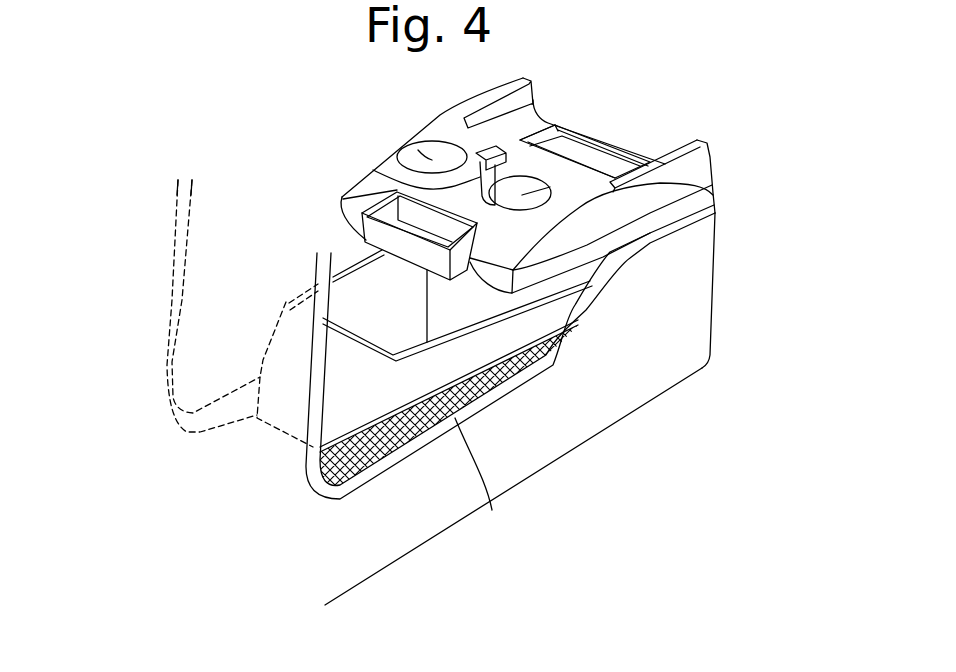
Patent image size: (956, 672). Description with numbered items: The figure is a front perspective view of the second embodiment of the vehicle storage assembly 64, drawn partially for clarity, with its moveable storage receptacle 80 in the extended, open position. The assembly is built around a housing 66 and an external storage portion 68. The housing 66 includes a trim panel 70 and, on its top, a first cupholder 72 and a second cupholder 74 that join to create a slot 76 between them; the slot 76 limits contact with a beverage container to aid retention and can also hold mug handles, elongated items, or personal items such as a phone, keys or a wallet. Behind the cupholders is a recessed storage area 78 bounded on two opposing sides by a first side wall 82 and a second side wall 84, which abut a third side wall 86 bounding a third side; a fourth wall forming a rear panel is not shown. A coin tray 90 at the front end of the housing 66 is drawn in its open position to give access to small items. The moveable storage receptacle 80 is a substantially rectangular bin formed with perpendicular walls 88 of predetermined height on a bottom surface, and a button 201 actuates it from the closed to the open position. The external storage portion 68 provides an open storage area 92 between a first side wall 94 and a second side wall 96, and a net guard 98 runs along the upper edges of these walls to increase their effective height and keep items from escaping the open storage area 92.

The vehicle storage assembly 64 is at (120, 213).
The housing 66 is at (750, 283).
The external storage portion 68 is at (582, 490).
The trim panel 70 is at (641, 369).
The first cupholder 72 is at (415, 152).
The second cupholder 74 is at (715, 196).
The slot 76 is at (373, 170).
The recessed storage area 78 is at (603, 160).
The moveable storage receptacle 80 is at (357, 303).
The first side wall 82 is at (525, 90).
The second side wall 84 is at (690, 170).
The third side wall 86 is at (600, 160).
The perpendicular walls 88 is at (353, 263).
The coin tray 90 is at (357, 193).
The open storage area 92 is at (272, 440).
The first side wall 94 is at (420, 505).
The second side wall 96 is at (230, 397).
The net guard 98 is at (492, 510).
The button 201 is at (430, 157).